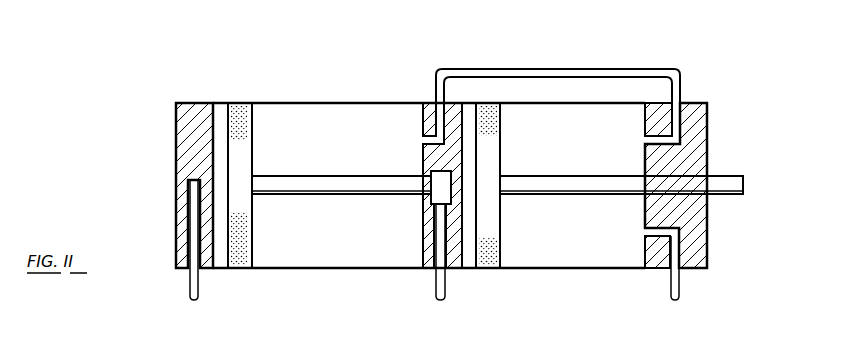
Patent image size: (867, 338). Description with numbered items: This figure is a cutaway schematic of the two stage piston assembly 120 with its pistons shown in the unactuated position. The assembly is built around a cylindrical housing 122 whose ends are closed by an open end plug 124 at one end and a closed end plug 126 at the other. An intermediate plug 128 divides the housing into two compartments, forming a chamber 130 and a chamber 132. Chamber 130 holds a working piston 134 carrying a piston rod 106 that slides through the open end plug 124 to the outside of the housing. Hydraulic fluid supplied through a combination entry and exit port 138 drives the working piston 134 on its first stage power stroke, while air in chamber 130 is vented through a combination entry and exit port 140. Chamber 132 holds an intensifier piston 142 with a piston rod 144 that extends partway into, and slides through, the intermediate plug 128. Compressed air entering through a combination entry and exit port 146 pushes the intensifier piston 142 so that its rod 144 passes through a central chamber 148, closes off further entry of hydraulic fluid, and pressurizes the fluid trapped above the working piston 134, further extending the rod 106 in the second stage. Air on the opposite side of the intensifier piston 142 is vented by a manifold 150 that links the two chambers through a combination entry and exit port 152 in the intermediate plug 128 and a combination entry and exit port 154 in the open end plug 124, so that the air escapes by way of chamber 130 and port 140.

The two stage piston assembly 120 is at (406, 46).
The cylindrical housing 122 is at (333, 102).
The open end plug 124 is at (700, 151).
The closed end plug 126 is at (176, 131).
The intermediate plug 128 is at (455, 257).
The chamber 130 is at (542, 146).
The chamber 132 is at (340, 146).
The working piston 134 is at (490, 222).
The combination entry and exit port 138 is at (436, 293).
The combination entry and exit port 140 is at (680, 292).
The intensifier piston 142 is at (237, 102).
The piston rod 144 is at (310, 193).
The combination entry and exit port 146 is at (200, 292).
The central chamber 148 is at (452, 195).
The manifold 150 is at (575, 69).
The combination entry and exit port 152 is at (424, 139).
The combination entry and exit port 154 is at (645, 146).
The piston rod 106 is at (615, 194).